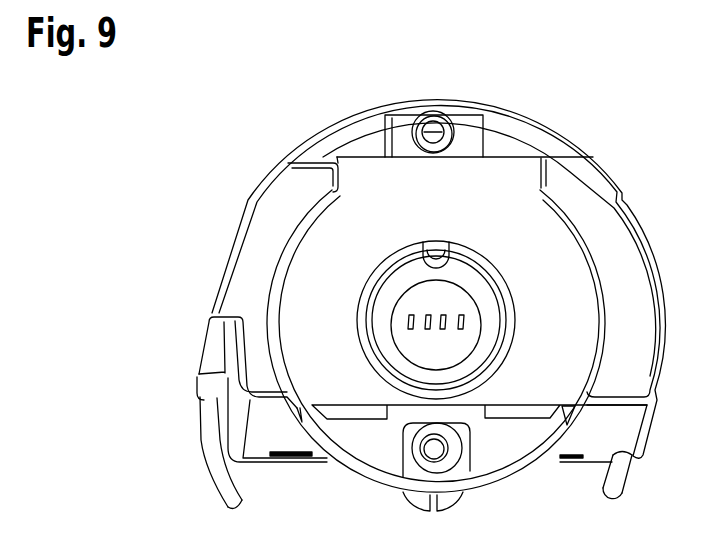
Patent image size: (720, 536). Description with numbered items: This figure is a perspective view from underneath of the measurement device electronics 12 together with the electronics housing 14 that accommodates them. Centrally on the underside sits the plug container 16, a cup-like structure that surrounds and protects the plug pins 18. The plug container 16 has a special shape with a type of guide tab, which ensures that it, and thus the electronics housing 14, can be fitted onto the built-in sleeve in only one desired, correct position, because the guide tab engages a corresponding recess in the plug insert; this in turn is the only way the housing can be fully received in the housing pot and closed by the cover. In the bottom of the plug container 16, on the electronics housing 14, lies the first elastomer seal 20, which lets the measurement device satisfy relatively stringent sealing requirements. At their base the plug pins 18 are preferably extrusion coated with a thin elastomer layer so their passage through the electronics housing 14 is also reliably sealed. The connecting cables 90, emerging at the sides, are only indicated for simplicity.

The measurement device electronics 12 is at (574, 137).
The electronics housing 14 is at (377, 200).
The plug container 16 is at (482, 262).
The plug pins 18 is at (462, 318).
The first elastomer seal 20 is at (503, 363).
The connecting cables 90 is at (213, 490).